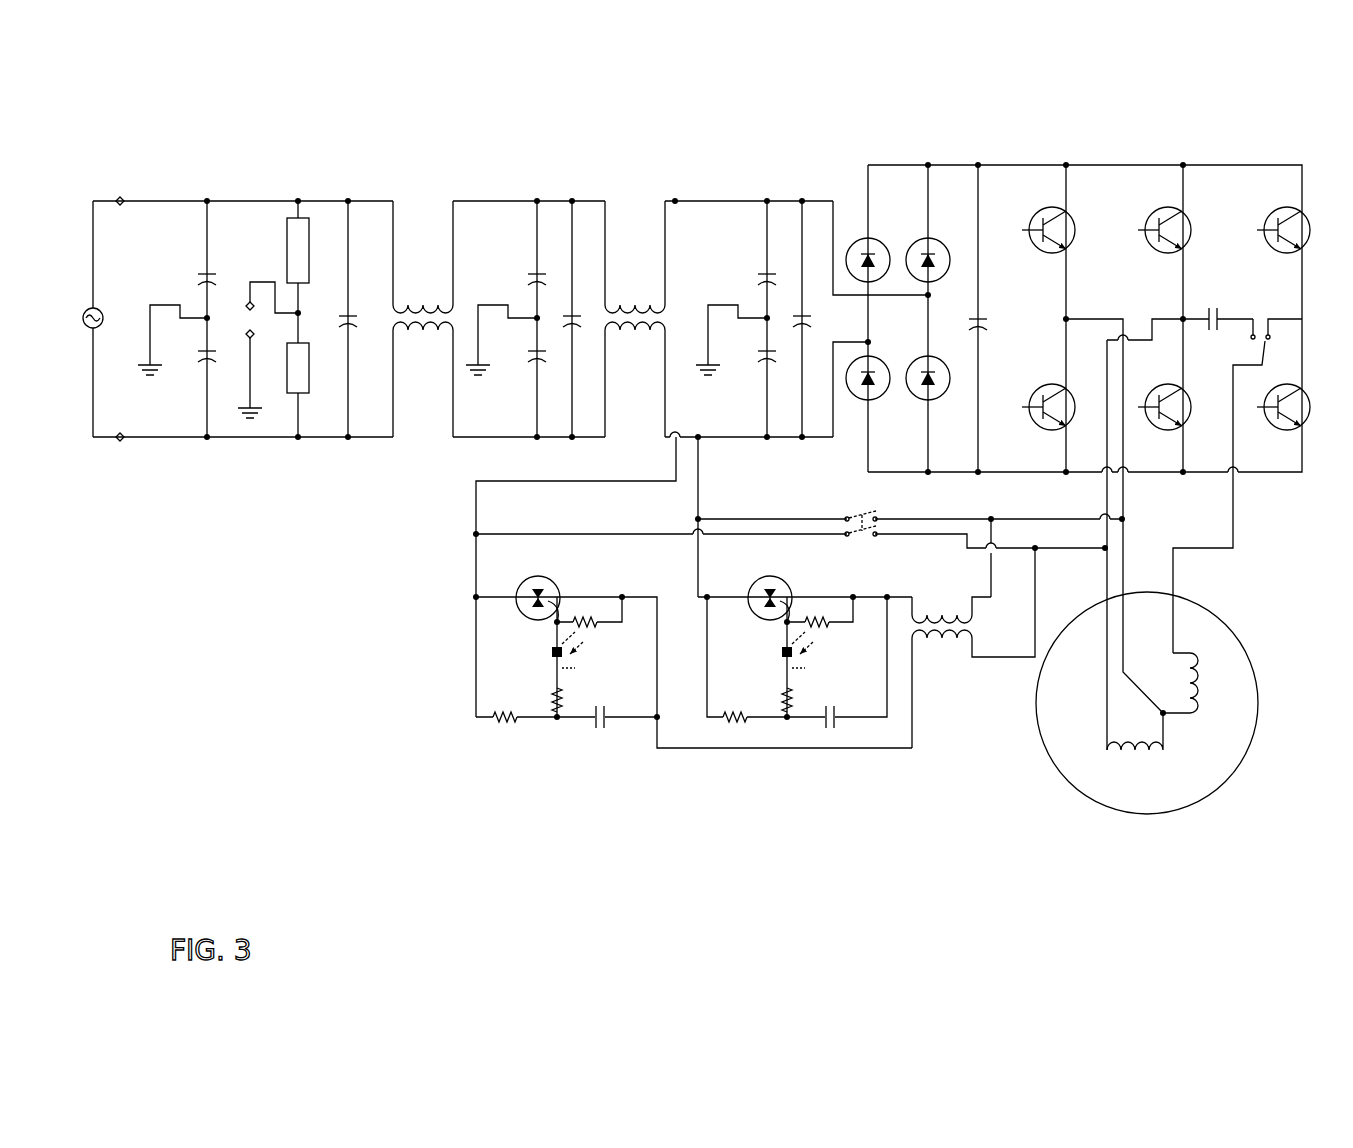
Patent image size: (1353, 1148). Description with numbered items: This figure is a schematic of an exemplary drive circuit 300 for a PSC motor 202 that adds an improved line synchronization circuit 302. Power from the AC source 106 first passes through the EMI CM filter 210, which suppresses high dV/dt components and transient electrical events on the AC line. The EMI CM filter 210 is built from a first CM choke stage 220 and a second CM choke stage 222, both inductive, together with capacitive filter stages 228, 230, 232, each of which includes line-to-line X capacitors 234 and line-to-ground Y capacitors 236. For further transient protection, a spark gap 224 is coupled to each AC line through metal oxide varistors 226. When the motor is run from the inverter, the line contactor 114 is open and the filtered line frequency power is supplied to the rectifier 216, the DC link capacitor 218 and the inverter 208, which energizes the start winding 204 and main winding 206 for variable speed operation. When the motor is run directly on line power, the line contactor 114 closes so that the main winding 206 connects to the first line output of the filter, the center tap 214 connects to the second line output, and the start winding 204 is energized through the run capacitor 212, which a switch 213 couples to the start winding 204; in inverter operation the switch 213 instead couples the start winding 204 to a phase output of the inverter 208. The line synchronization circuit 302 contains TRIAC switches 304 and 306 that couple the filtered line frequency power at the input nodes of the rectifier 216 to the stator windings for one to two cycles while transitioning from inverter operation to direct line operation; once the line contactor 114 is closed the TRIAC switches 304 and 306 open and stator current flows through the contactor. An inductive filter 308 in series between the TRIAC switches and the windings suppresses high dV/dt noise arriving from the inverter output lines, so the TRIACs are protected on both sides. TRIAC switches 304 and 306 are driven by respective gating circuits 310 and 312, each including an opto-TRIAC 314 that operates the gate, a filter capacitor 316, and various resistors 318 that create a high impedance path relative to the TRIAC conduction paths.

The drive circuit 300 is at (233, 137).
The AC source 106 is at (100, 311).
The EMI CM filter 210 is at (633, 128).
The capacitive filter stage 228 is at (273, 368).
The capacitive filter stage 230 is at (559, 284).
The capacitive filter stage 232 is at (775, 448).
The first CM choke stage 220 is at (418, 340).
The second CM choke stage 222 is at (628, 348).
The spark gap 224 is at (255, 275).
The metal oxide varistor 226 is at (305, 228).
The X capacitor 234 is at (360, 305).
The Y capacitor 236 is at (228, 378).
The rectifier 216 is at (922, 132).
The DC link capacitor 218 is at (987, 303).
The inverter 208 is at (1136, 395).
The run capacitor 212 is at (1218, 294).
The switch 213 is at (1276, 348).
The line contactor 114 is at (853, 512).
The line synchronization circuit 302 is at (410, 665).
The TRIAC switch 304 is at (549, 585).
The TRIAC switch 306 is at (783, 585).
The inductive filter 308 is at (945, 648).
The gating circuit 310 is at (578, 775).
The gating circuit 312 is at (805, 775).
The opto-TRIAC 314 is at (546, 667).
The filter capacitor 316 is at (592, 738).
The resistor 318 is at (607, 632).
The PSC motor 202 is at (1133, 728).
The start winding 204 is at (1195, 683).
The main winding 206 is at (1118, 762).
The center tap 214 is at (1176, 733).